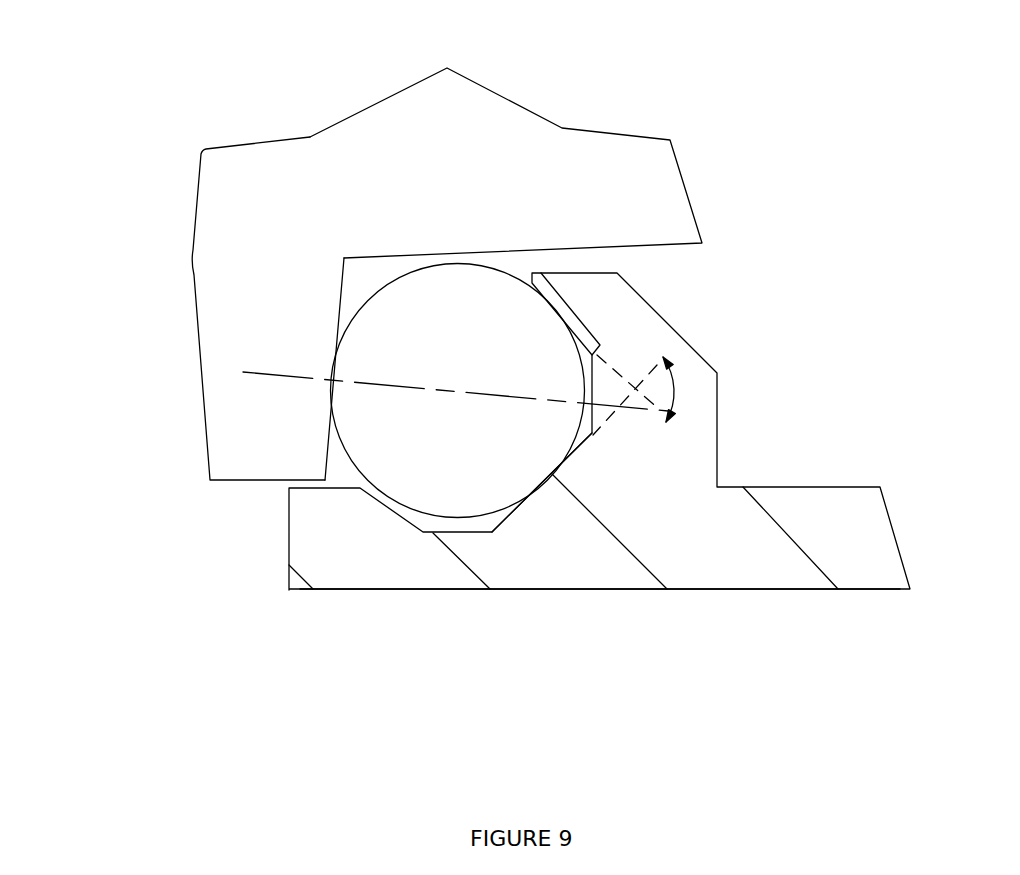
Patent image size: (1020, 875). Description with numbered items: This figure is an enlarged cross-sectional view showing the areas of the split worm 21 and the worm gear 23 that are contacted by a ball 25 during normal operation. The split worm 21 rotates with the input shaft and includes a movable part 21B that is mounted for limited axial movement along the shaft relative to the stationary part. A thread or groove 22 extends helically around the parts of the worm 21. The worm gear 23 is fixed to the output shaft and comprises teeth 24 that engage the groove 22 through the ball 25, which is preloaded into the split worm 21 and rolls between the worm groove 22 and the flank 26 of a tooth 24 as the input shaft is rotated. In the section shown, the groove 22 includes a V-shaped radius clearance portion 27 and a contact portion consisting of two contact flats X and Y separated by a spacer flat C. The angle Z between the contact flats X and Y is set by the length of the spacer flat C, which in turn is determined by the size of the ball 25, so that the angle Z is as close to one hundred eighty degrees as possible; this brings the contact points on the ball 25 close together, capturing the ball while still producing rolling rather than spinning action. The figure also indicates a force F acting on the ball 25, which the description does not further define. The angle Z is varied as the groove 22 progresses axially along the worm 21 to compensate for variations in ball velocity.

The split worm 21 is at (602, 431).
The movable part 21B is at (600, 645).
The groove 22 is at (604, 551).
The worm gear 23 is at (506, 129).
The teeth 24 is at (197, 315).
The ball 25 is at (468, 287).
The flank 26 is at (192, 323).
The V-shaped radius clearance portion 27 is at (516, 419).
The applied force F is at (313, 156).
The contact flat X is at (720, 330).
The spacer flat C is at (723, 343).
The angle Z is at (715, 389).
The contact flat Y is at (554, 612).